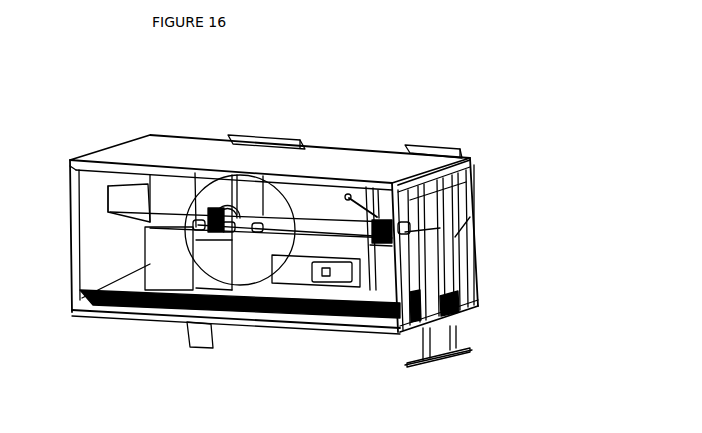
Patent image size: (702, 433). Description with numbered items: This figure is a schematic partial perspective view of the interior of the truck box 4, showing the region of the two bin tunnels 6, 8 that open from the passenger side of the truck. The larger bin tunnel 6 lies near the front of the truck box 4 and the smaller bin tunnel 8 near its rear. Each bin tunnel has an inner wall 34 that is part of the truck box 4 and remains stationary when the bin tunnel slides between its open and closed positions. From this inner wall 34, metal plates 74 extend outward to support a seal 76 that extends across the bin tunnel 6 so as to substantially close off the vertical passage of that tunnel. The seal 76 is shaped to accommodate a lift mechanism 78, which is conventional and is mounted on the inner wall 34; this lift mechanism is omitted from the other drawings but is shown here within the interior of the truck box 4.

The truck box 4 is at (338, 152).
The bin tunnel 6 is at (262, 136).
The bin tunnel 8 is at (440, 147).
The inner wall 34 is at (222, 258).
The metal plates 74 is at (193, 228).
The seal 76 is at (243, 237).
The lift mechanism 78 is at (214, 212).